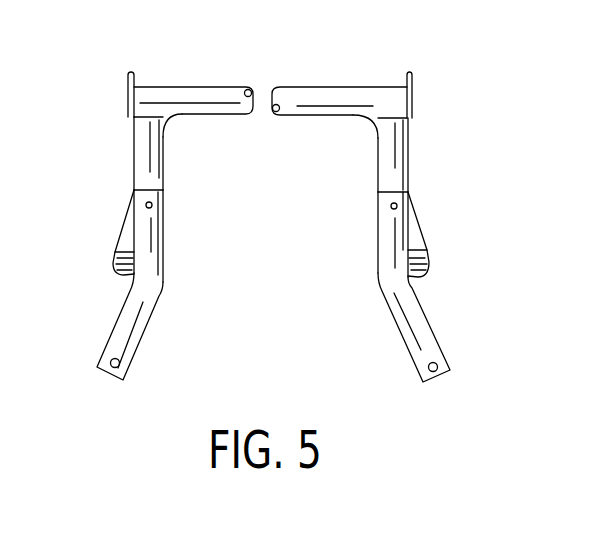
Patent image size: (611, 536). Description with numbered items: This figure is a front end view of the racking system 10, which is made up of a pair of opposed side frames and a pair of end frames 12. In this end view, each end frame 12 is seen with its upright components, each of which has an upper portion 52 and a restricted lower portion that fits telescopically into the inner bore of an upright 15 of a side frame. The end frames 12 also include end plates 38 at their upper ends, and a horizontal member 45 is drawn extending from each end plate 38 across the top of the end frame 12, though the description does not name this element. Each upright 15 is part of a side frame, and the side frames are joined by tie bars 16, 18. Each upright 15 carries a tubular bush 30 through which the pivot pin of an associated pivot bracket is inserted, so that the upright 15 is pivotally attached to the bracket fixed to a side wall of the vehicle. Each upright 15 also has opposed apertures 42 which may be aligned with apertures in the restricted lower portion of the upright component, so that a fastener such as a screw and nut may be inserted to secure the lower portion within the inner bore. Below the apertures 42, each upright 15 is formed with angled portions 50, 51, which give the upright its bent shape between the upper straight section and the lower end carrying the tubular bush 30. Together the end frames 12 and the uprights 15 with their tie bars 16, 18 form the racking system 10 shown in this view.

The racking system 10 is at (432, 120).
The end frame 12 is at (379, 67).
The upright 15 is at (174, 290).
The tie bar 16 is at (118, 260).
The tie bar 18 is at (127, 243).
The tubular bush 30 is at (113, 367).
The end plate 38 is at (127, 85).
The aperture 42 is at (153, 203).
The horizontal arm 45 is at (203, 93).
The angled portion 50 is at (157, 237).
The angled portion 51 is at (135, 333).
The upper portion 52 is at (143, 142).